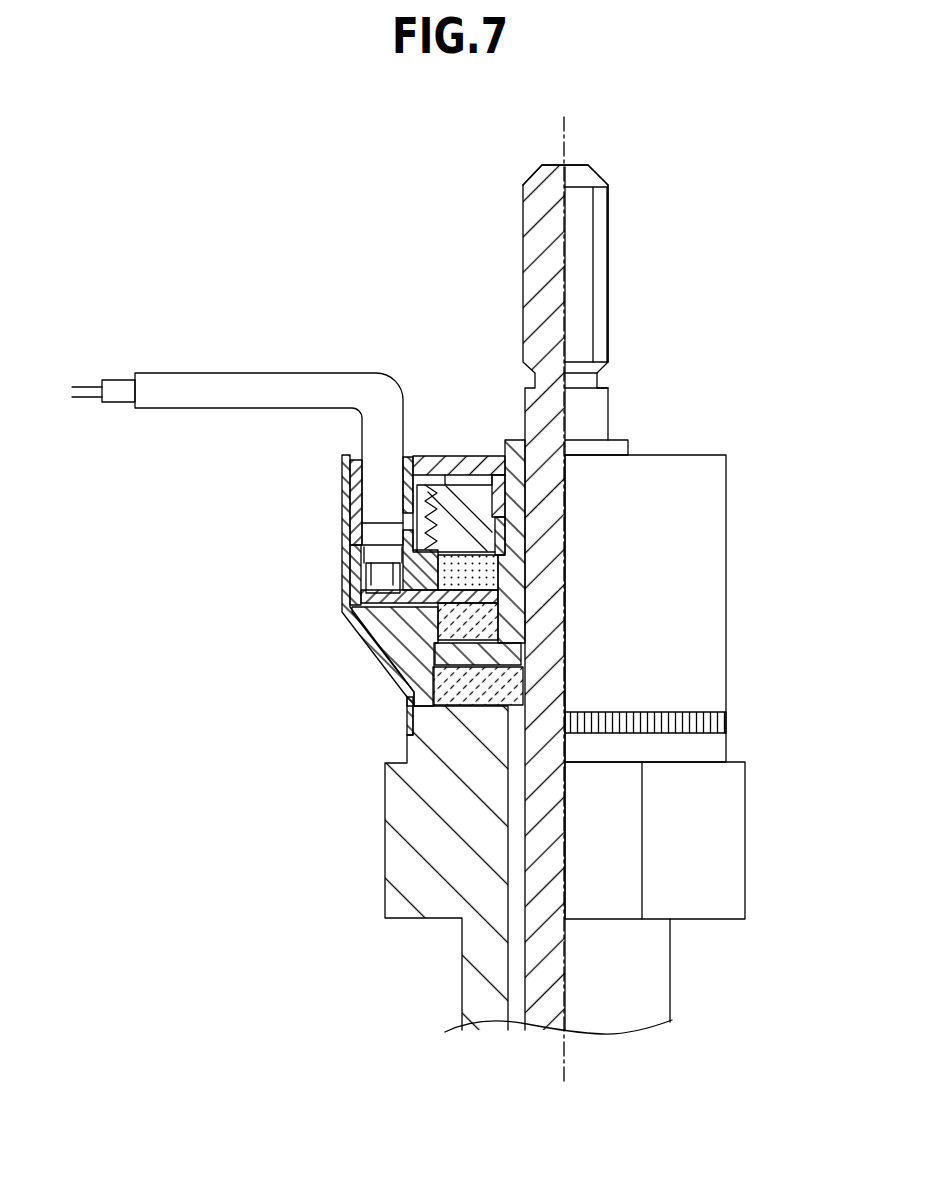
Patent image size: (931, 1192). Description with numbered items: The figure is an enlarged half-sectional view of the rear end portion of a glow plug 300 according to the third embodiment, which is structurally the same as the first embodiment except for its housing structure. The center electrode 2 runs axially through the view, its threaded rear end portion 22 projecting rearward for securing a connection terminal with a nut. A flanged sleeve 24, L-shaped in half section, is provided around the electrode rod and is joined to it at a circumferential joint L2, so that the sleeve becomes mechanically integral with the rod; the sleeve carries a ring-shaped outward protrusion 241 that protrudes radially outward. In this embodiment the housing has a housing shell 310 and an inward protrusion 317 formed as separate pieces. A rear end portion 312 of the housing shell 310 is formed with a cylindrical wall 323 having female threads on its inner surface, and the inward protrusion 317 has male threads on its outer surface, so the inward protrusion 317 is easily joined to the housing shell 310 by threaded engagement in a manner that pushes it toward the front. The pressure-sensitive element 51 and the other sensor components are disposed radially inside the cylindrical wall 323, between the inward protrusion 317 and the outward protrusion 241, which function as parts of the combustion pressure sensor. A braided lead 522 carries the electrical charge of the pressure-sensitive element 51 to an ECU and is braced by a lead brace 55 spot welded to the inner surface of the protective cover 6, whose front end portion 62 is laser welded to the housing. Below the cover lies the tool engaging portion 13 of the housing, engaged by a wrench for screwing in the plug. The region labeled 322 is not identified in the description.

The glow plug 300 is at (366, 200).
The center electrode 2 is at (553, 522).
The rear end portion 22 is at (580, 283).
The flanged sleeve 24 is at (617, 448).
The circumferential joint L2 is at (517, 440).
The protective cover 6 is at (698, 588).
The front end portion 62 is at (715, 722).
The tool engaging portion 13 is at (698, 912).
The housing shell 310 is at (385, 870).
The rear end portion 312 is at (412, 743).
The lead brace 55 is at (340, 467).
The cylindrical wall 323 is at (393, 523).
The lead 522 is at (270, 382).
The pressure-sensitive element 51 is at (430, 575).
The inward protrusion 317 is at (452, 507).
The diaphragm portion 322 is at (423, 621).
The outward protrusion 241 is at (450, 652).